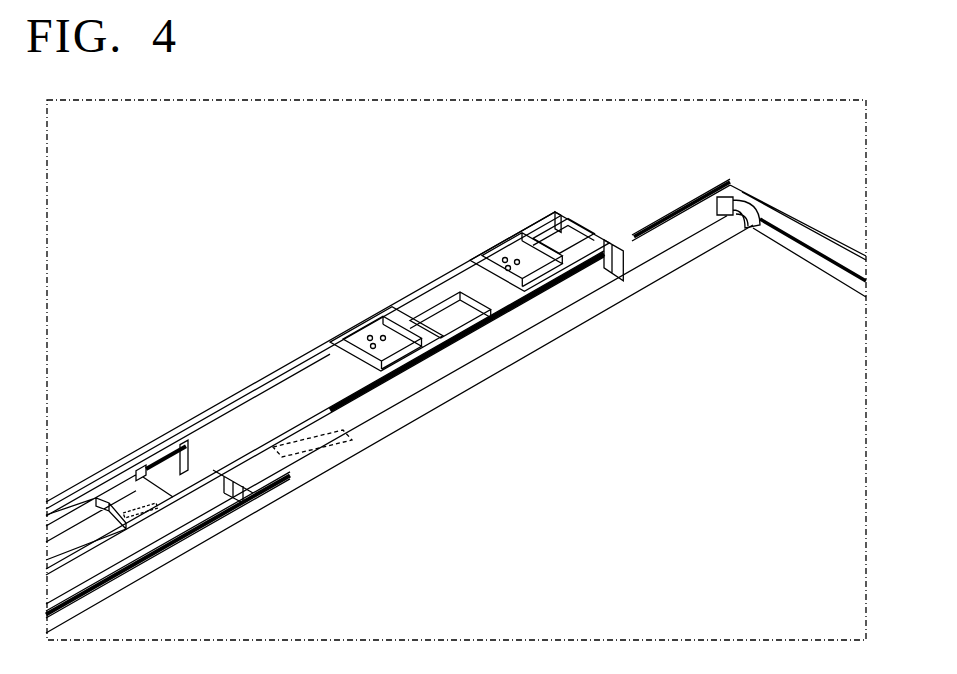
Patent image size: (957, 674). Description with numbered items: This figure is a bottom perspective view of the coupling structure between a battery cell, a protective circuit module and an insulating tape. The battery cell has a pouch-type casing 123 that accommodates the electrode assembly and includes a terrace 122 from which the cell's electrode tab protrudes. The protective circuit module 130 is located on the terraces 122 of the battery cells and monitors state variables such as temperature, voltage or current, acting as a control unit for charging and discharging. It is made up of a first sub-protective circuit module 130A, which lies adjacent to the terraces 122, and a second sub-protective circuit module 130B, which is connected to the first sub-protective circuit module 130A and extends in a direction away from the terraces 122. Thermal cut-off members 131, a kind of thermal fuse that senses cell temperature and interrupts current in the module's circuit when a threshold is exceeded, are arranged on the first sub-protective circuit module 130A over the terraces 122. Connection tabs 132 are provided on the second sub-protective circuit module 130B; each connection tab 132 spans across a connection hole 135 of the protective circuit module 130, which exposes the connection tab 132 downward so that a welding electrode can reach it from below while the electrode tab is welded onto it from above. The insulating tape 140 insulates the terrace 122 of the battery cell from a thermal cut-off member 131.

The terrace 122 is at (668, 237).
The casing 123 is at (718, 238).
The protective circuit module 130 is at (418, 307).
The first sub-protective circuit module 130A is at (617, 266).
The second sub-protective circuit module 130B is at (567, 210).
The thermal cut-off member 131 is at (312, 447).
The connection tab 132 is at (480, 268).
The connection hole 135 is at (472, 262).
The insulating tape 140 is at (571, 296).